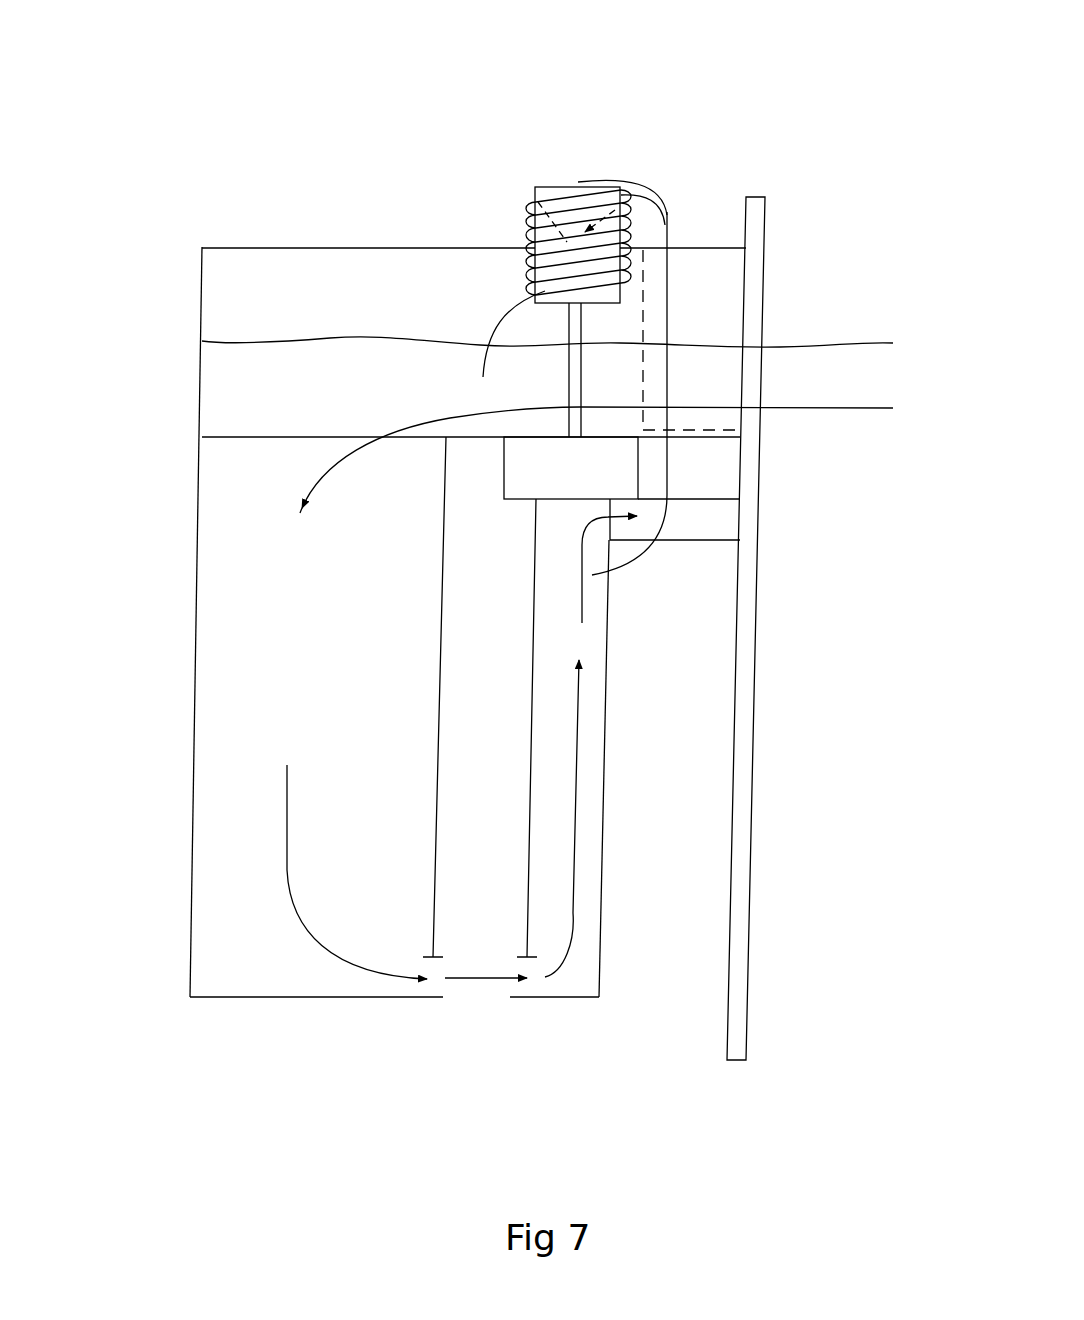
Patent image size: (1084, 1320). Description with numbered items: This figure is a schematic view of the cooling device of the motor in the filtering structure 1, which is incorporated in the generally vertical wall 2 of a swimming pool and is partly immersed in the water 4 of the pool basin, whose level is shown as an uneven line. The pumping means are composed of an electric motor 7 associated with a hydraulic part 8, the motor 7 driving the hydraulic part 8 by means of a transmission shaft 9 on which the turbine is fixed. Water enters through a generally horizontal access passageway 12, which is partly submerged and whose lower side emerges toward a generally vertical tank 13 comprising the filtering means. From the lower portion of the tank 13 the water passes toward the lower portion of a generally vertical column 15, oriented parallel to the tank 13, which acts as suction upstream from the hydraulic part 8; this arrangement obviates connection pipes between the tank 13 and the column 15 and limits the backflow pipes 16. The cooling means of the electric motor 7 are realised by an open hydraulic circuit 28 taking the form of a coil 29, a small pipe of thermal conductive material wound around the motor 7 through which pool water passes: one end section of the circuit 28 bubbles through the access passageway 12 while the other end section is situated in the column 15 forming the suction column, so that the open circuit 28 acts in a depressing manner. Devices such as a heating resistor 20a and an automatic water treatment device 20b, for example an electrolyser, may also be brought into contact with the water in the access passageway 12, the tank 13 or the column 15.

The filtering structure 1 is at (640, 115).
The generally vertical wall 2 is at (767, 720).
The water 4 is at (834, 384).
The electric motor 7 is at (535, 200).
The hydraulic part 8 is at (571, 481).
The transmission shaft 9 is at (577, 337).
The access passageway 12 is at (372, 316).
The tank 13 is at (230, 723).
The column 15 is at (587, 790).
The backflow pipes 16 is at (690, 536).
The heating resistor 20a is at (707, 317).
The automatic water treatment device 20b is at (787, 285).
The open hydraulic circuit 28 is at (677, 220).
The coil 29 is at (672, 198).